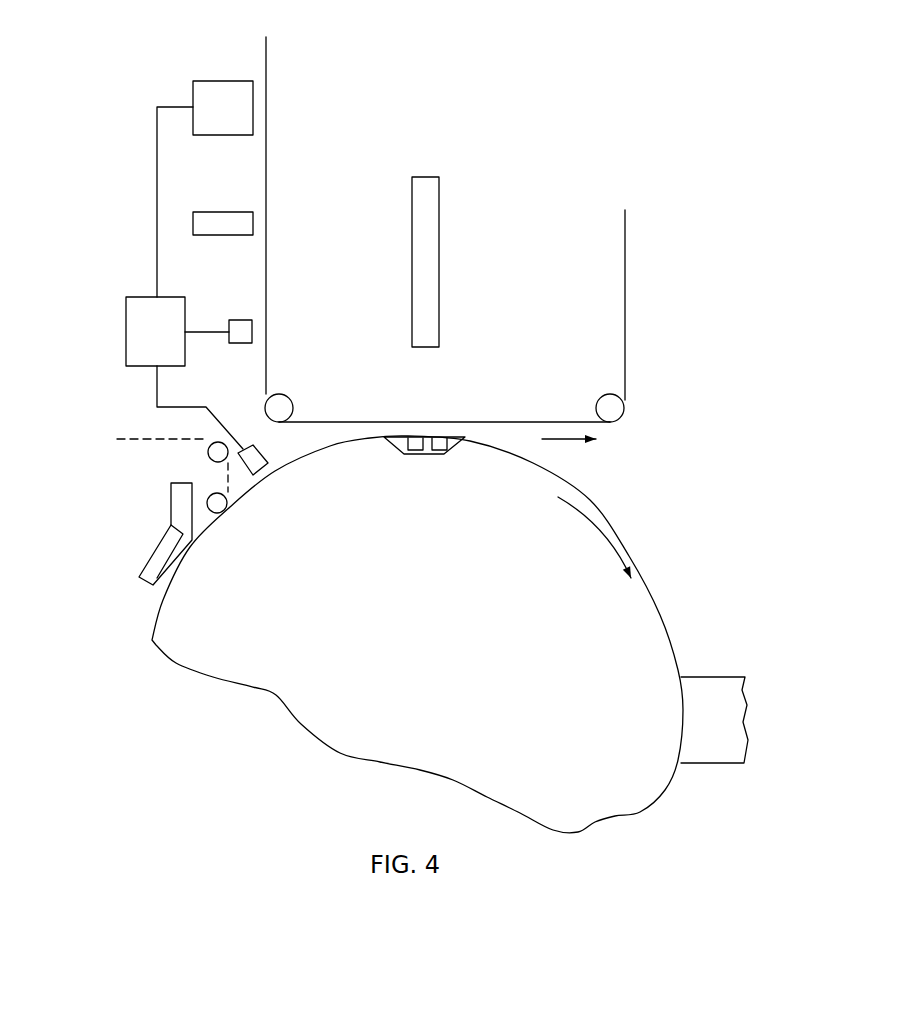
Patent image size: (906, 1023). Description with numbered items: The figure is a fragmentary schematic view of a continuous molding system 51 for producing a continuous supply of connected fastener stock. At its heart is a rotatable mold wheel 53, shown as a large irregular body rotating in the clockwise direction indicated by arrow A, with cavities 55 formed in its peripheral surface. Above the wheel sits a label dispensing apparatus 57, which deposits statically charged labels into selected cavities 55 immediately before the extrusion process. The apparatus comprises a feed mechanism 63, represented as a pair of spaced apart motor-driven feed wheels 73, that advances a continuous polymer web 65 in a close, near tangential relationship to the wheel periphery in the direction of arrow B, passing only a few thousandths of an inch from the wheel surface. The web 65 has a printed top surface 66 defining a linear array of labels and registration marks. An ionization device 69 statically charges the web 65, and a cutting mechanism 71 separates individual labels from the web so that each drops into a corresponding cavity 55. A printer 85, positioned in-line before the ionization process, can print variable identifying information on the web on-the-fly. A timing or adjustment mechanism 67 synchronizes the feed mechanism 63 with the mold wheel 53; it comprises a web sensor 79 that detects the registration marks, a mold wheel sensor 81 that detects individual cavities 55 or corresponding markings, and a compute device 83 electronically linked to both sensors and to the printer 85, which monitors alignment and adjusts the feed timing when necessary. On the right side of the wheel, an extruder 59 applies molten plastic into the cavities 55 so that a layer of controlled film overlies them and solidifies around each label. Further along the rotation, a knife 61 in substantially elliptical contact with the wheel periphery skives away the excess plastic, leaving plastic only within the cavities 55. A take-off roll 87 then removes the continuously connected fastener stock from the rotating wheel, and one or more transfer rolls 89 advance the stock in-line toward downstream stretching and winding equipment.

The continuous molding system 51 is at (176, 710).
The mold wheel 53 is at (408, 656).
The cavities 55 is at (426, 446).
The label dispensing apparatus 57 is at (632, 180).
The extruder 59 is at (712, 677).
The knife 61 is at (171, 505).
The feed mechanism 63 is at (629, 428).
The continuous polymer web 65 is at (485, 422).
The top surface 66 is at (266, 109).
The adjustment mechanism 67 is at (137, 377).
The ionization device 69 is at (223, 212).
The cutting mechanism 71 is at (439, 262).
The feed wheels 73 is at (281, 394).
The web sensor 79 is at (240, 320).
The mold wheel sensor 81 is at (262, 455).
The compute device 83 is at (126, 332).
The printer 85 is at (223, 81).
The take-off roll 87 is at (226, 508).
The transfer rolls 89 is at (207, 452).
The rotation direction A is at (592, 528).
The arrow B is at (572, 440).